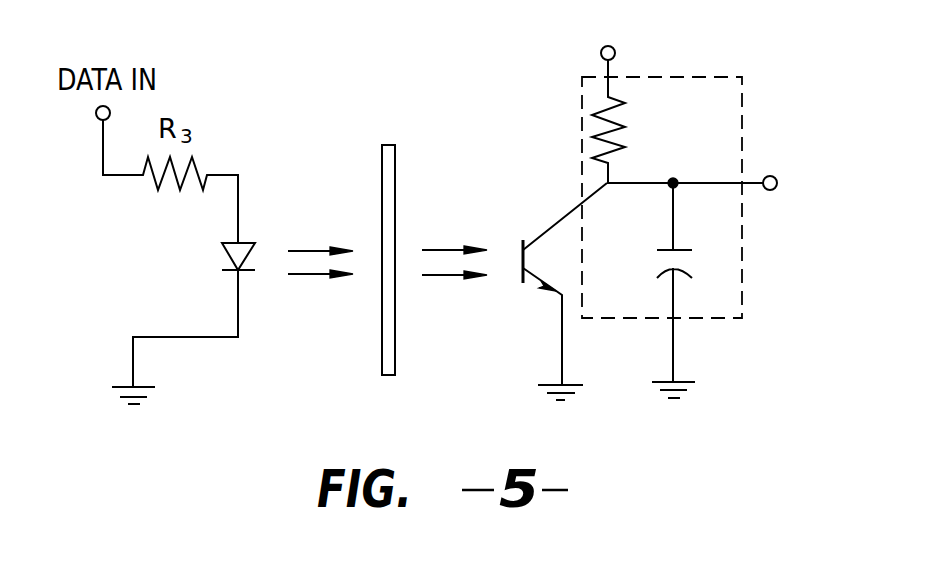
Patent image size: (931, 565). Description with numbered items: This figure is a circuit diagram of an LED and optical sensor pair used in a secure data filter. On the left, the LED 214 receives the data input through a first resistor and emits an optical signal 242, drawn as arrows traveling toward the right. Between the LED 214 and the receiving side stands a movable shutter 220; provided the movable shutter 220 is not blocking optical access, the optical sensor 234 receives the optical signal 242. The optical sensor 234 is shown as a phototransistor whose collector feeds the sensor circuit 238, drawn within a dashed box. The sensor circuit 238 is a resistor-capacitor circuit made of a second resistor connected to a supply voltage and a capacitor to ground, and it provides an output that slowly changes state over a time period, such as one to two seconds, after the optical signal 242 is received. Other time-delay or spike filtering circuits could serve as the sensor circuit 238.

The LED 214 is at (228, 250).
The movable shutter 220 is at (388, 145).
The optical sensor 234 is at (522, 250).
The sensor circuit 238 is at (683, 77).
The optical signal 242 is at (310, 250).